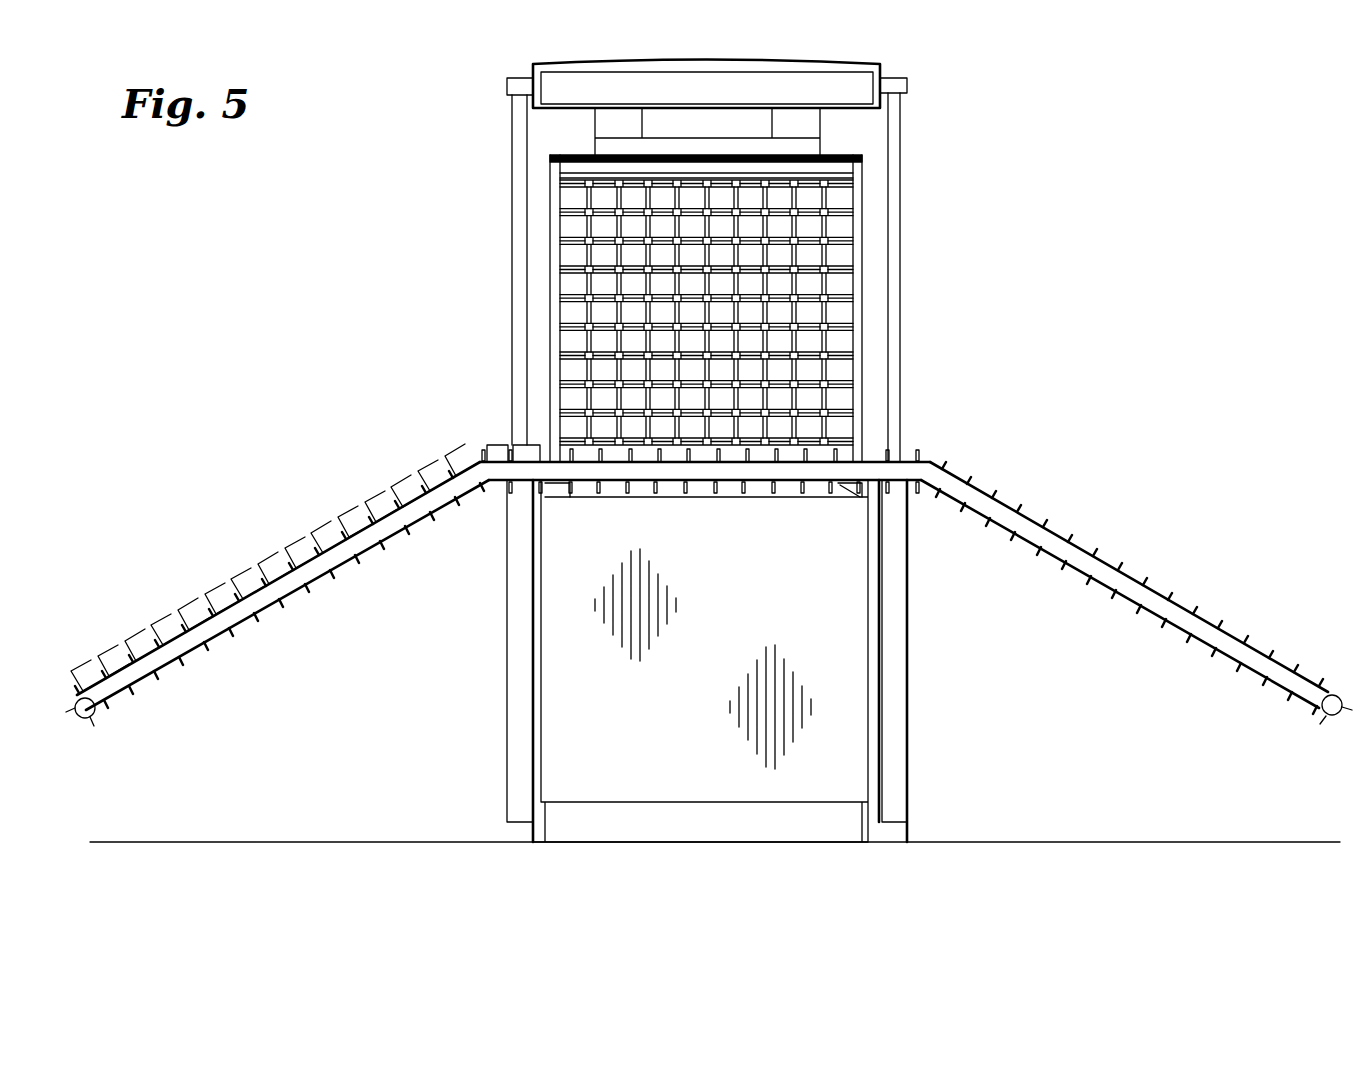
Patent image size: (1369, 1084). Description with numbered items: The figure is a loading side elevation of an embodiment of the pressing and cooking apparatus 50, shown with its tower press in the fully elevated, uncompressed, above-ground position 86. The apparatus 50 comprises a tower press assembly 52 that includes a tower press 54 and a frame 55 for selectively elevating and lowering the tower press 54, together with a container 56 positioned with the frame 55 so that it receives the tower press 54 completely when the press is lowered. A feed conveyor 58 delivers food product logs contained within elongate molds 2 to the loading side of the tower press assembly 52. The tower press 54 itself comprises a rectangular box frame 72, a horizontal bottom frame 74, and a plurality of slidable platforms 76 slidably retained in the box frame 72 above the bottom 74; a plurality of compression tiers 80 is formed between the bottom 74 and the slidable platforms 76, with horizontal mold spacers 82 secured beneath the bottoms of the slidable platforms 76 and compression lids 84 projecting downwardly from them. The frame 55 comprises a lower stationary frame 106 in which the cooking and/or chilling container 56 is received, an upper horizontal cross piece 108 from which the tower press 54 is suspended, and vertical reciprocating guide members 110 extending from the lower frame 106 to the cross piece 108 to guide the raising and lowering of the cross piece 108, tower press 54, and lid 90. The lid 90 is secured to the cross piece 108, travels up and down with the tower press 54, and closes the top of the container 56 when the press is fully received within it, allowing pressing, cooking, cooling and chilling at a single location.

The elongate molds 2 is at (415, 482).
The pressing and cooking apparatus 50 is at (962, 118).
The tower press assembly 52 is at (501, 189).
The tower press 54 is at (556, 285).
The frame 55 is at (505, 672).
The container 56 is at (873, 715).
The feed conveyor 58 is at (218, 638).
The rectangular box frame 72 is at (862, 360).
The horizontal bottom frame 74 is at (735, 465).
The slidable platforms 76 is at (858, 240).
The compression tiers 80 is at (565, 243).
The horizontal mold spacers 82 is at (740, 182).
The compression lids 84 is at (627, 437).
The fully elevated, uncompressed, above-ground position 86 is at (856, 262).
The lid 90 is at (575, 68).
The lower stationary frame 106 is at (915, 575).
The upper horizontal cross piece 108 is at (905, 80).
The vertical reciprocating guide members 110 is at (520, 315).